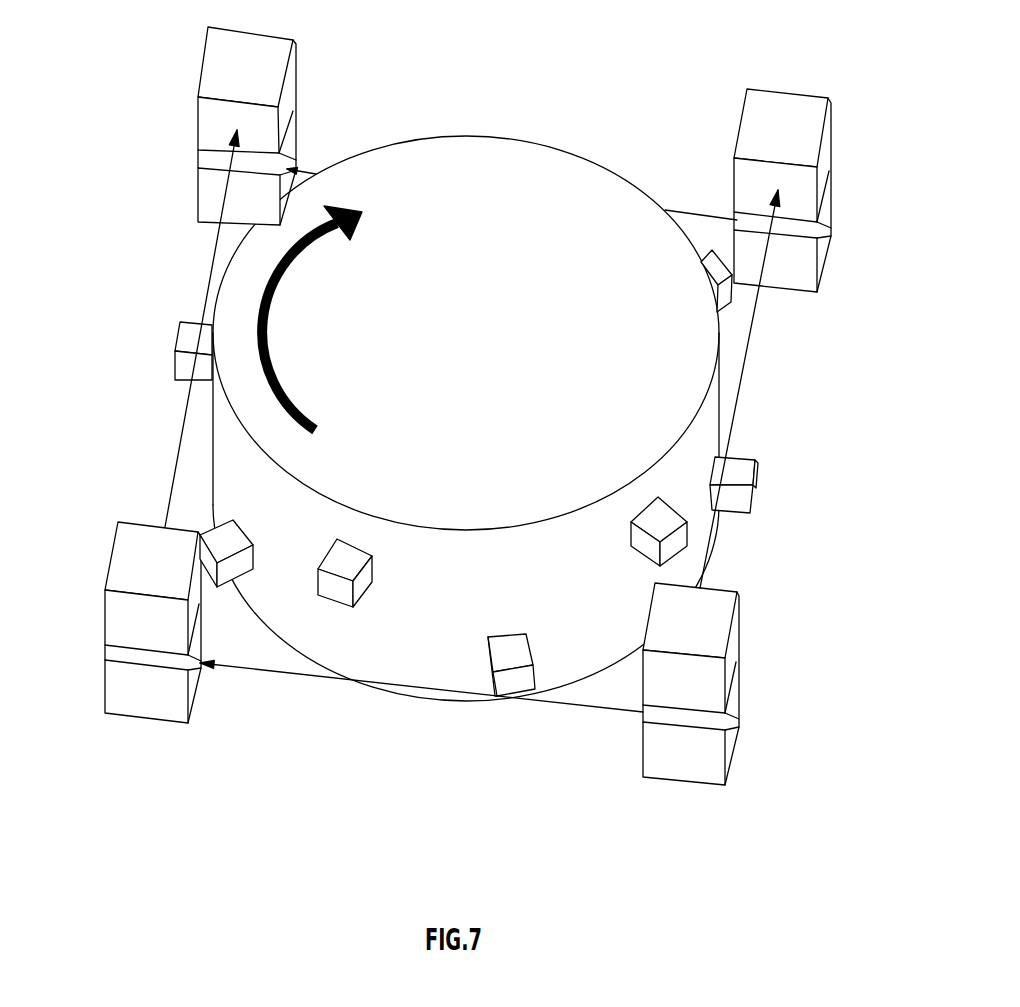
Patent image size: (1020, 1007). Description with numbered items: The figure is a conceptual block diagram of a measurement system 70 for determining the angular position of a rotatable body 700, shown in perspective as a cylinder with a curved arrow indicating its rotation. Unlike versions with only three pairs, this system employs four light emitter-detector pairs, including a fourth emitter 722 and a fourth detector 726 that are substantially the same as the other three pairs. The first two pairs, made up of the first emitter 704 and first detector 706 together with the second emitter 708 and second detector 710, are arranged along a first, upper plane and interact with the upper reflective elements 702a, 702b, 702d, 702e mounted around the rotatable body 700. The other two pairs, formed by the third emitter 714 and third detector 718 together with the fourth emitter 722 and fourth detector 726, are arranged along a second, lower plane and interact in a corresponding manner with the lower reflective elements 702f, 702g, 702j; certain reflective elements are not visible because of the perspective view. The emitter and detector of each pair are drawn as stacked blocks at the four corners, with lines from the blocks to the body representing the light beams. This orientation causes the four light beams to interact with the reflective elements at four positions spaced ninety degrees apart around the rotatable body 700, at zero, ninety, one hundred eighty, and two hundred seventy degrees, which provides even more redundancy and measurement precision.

The measurement system 70 is at (627, 60).
The rotatable body 700 is at (482, 360).
The reflective element 702a is at (372, 566).
The reflective element 702b is at (175, 343).
The reflective element 702d is at (715, 270).
The reflective element 702e is at (645, 555).
The reflective element 702f is at (488, 673).
The reflective element 702g is at (240, 536).
The reflective element 702j is at (757, 470).
The first emitter 704 is at (113, 552).
The first detector 706 is at (737, 628).
The second emitter 708 is at (206, 60).
The second detector 710 is at (789, 90).
The third emitter 714 is at (694, 783).
The third detector 718 is at (145, 722).
The fourth emitter 722 is at (825, 260).
The fourth detector 726 is at (198, 182).